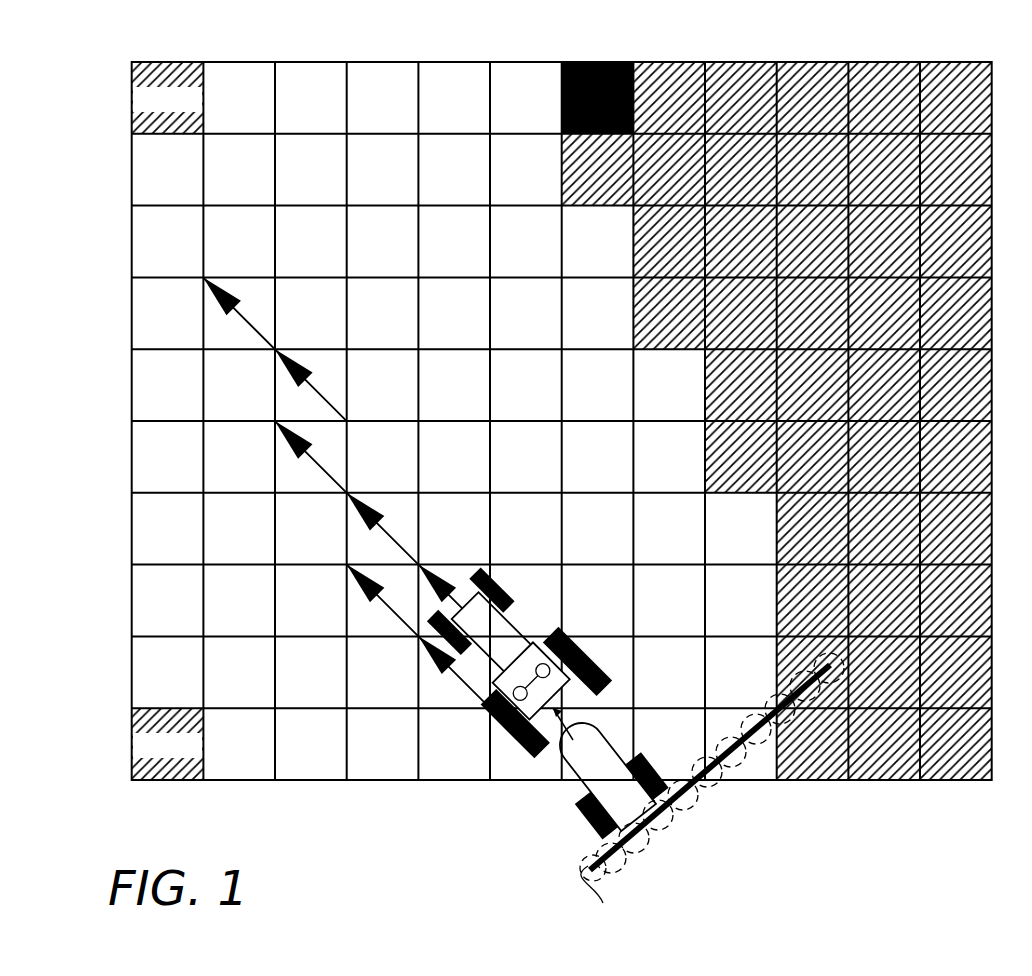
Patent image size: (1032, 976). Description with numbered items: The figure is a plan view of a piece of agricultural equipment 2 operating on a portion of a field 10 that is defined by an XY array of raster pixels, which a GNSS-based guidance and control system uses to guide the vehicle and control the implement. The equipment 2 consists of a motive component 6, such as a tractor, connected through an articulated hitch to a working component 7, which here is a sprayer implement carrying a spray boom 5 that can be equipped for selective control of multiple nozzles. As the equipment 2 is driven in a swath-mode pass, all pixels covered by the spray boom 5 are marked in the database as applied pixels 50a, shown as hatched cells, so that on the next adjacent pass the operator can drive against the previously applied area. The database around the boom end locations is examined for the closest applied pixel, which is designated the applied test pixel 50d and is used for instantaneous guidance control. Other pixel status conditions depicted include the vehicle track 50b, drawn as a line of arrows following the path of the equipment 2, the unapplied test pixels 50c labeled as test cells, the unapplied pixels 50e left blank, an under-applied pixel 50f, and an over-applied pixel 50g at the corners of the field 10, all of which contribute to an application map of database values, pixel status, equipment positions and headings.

The agricultural equipment 2 is at (507, 558).
The boom 5 is at (646, 831).
The motive component 6 is at (492, 632).
The working component 7 is at (590, 792).
The field 10 is at (992, 780).
The applied pixels 50a is at (705, 390).
The vehicle track pixels 50b is at (347, 421).
The unapplied test pixels 50c is at (313, 207).
The applied test pixel 50d is at (619, 62).
The unapplied pixels 50e is at (263, 180).
The under-applied pixel 50f is at (131, 742).
The over-applied pixel 50g is at (131, 100).